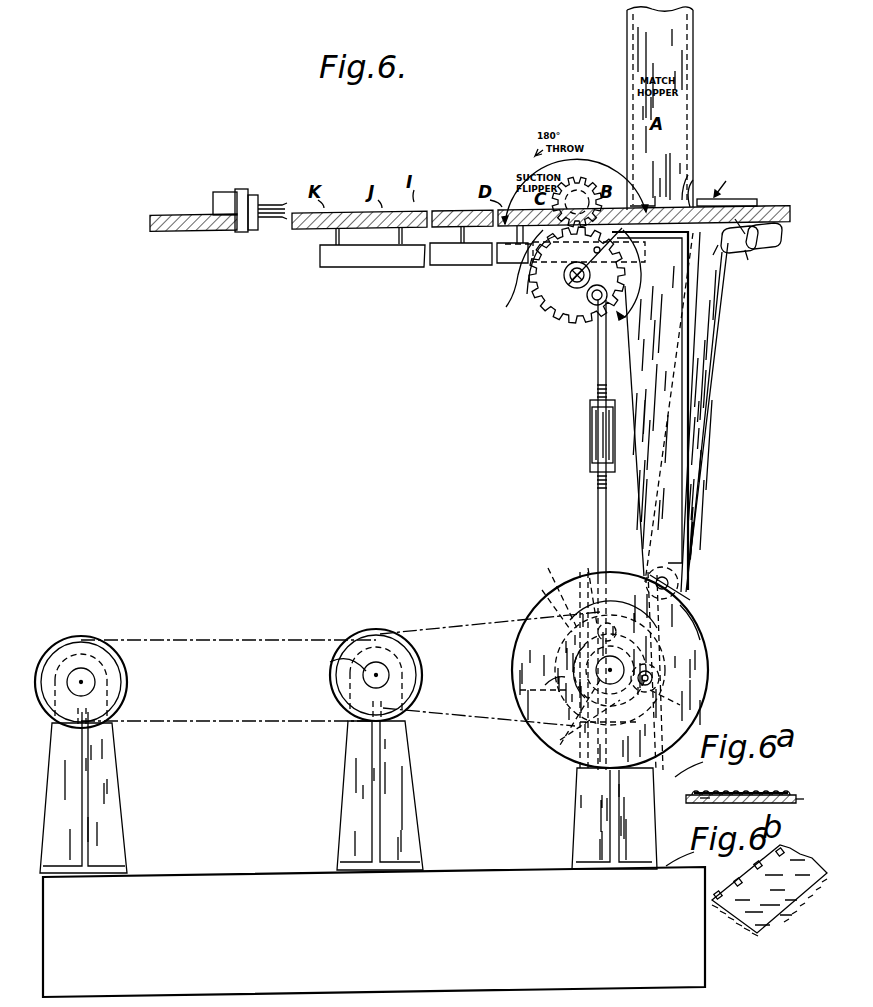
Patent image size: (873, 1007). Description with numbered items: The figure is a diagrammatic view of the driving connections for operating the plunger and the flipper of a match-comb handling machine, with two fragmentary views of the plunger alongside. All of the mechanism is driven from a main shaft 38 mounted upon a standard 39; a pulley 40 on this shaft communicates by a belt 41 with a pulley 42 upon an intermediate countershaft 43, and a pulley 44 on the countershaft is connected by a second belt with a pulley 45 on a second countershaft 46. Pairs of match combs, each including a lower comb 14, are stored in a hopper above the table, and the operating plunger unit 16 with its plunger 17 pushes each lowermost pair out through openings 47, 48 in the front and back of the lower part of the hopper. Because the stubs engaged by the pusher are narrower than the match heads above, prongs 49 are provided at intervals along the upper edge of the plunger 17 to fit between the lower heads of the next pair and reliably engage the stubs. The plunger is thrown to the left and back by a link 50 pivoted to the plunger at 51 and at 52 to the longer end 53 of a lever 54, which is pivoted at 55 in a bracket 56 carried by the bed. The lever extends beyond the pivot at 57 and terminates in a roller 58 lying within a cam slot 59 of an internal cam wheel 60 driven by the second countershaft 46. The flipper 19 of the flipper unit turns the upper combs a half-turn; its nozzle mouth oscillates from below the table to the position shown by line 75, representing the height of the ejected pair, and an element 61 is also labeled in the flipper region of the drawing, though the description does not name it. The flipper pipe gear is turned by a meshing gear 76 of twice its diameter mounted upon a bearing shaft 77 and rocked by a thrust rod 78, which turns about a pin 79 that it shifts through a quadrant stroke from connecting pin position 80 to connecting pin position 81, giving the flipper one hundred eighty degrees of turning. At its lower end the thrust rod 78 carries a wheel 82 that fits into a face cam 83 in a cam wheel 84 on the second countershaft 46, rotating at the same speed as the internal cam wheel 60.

In FIG. 6A, the lower comb 14 is at (770, 789).
In FIG. 6, the operating plunger unit 16 is at (732, 254).
In FIG. 6, the plunger 17 is at (757, 198).
In FIG. 6A, the plunger 17 is at (811, 806).
In FIG. 6B, the plunger 17 is at (769, 880).
In FIG. 6, the flipper 19 is at (528, 288).
In FIG. 6, the main shaft 38 is at (84, 673).
In FIG. 6, the standard 39 is at (105, 770).
In FIG. 6, the pulley 40 is at (83, 637).
In FIG. 6, the belt 41 is at (256, 634).
In FIG. 6, the pulley 42 is at (385, 635).
In FIG. 6, the countershaft 43 is at (334, 660).
In FIG. 6, the pulley 44 is at (391, 665).
In FIG. 6, the pulley 45 is at (553, 688).
In FIG. 6, the second countershaft 46 is at (616, 666).
In FIG. 6, the opening 47 is at (645, 204).
In FIG. 6, the opening 48 is at (692, 168).
In FIG. 6A, the prongs 49 is at (720, 801).
In FIG. 6B, the prongs 49 is at (720, 890).
In FIG. 6, the link 50 is at (767, 244).
In FIG. 6, the pivot 51 is at (775, 234).
In FIG. 6, the pivot 52 is at (720, 219).
In FIG. 6, the longer end 53 is at (716, 320).
In FIG. 6, the lever 54 is at (698, 453).
In FIG. 6, the pivot 55 is at (668, 583).
In FIG. 6, the bracket 56 is at (672, 506).
In FIG. 6, the lever extension 57 is at (667, 621).
In FIG. 6, the roller 58 is at (652, 684).
In FIG. 6, the cam slot 59 is at (685, 706).
In FIG. 6, the internal cam wheel 60 is at (700, 661).
In FIG. 6, the flipper arm 61 is at (516, 270).
In FIG. 6, the line 75 is at (579, 175).
In FIG. 6, the gear 76 is at (586, 303).
In FIG. 6, the bearing shaft 77 is at (563, 286).
In FIG. 6, the thrust rod 78 is at (598, 355).
In FIG. 6, the pin 79 is at (581, 284).
In FIG. 6, the connecting pin position 80 is at (625, 317).
In FIG. 6, the connecting pin position 81 is at (610, 248).
In FIG. 6, the wheel 82 is at (557, 586).
In FIG. 6, the face cam 83 is at (552, 600).
In FIG. 6, the cam wheel 84 is at (595, 562).